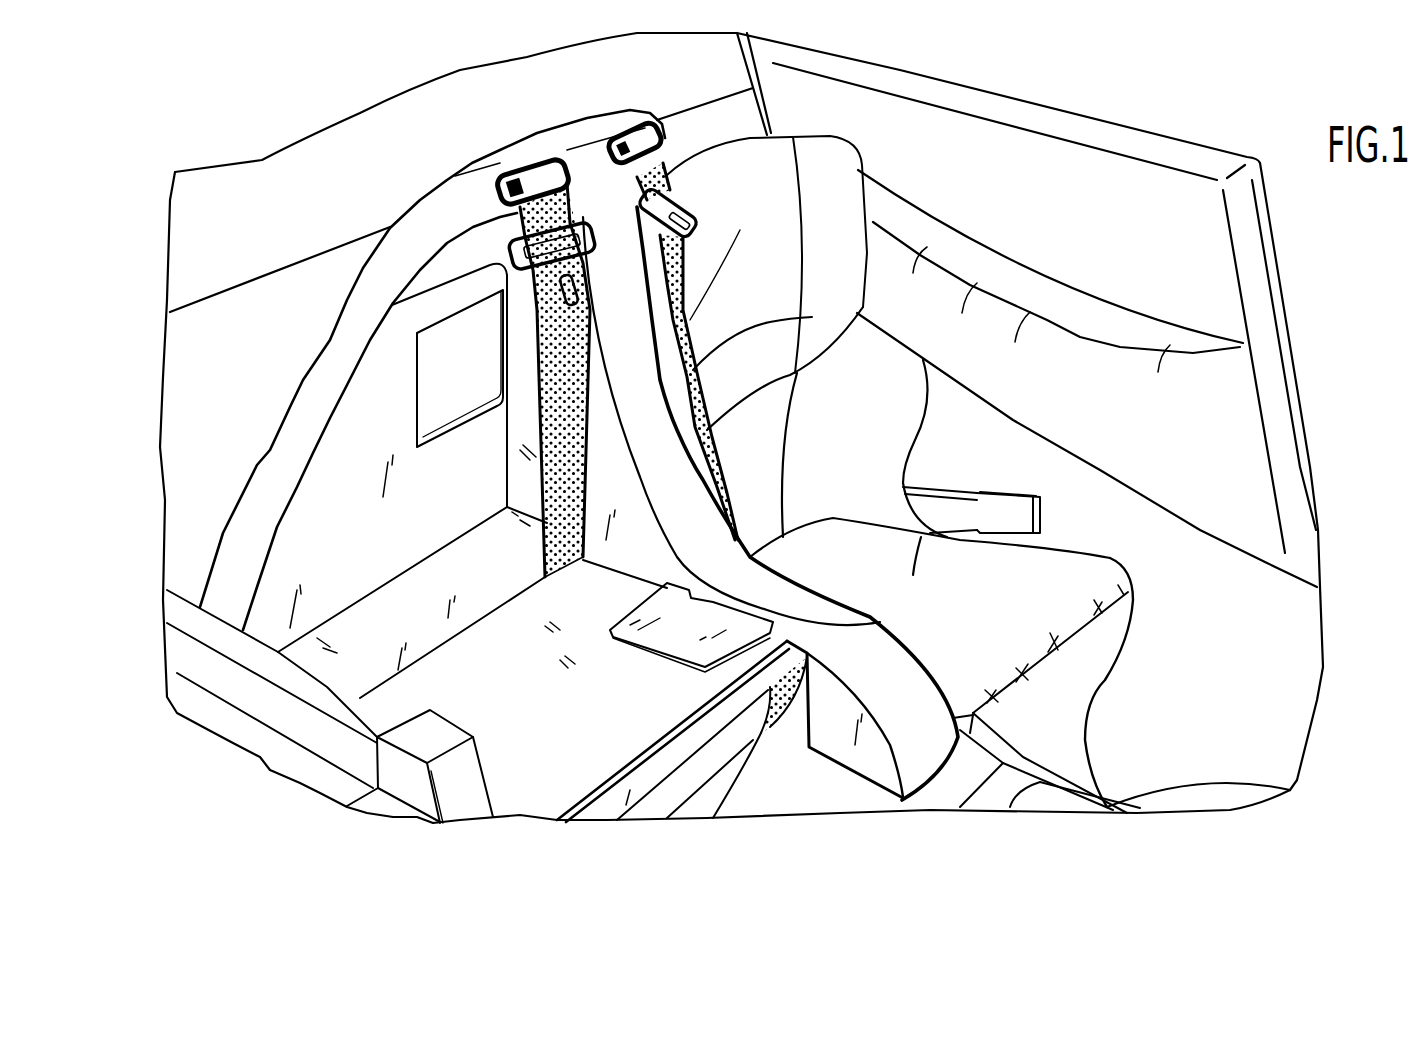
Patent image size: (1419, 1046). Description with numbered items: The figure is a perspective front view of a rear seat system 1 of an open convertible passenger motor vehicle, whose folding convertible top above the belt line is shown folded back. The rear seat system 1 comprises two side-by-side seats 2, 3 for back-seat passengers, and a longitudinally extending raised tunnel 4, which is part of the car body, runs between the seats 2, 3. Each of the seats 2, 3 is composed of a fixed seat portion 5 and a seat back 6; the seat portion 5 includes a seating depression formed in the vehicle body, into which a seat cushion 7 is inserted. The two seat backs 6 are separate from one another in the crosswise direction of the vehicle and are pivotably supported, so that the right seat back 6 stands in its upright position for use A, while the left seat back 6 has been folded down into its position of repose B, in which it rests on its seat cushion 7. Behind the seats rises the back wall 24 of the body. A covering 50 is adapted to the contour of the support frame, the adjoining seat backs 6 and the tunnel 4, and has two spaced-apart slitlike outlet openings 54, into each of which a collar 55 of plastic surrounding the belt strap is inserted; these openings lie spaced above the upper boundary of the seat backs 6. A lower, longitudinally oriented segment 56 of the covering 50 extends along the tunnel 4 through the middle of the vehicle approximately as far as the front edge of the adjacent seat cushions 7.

The rear seat system 1 is at (920, 827).
The seat 2 is at (558, 830).
The seat 3 is at (1066, 740).
The tunnel 4 is at (1007, 783).
The seat portion 5 is at (1055, 578).
The seat back 6 is at (790, 233).
The seat cushion 7 is at (1050, 630).
The back wall 24 is at (269, 361).
The covering 50 is at (496, 140).
The outlet opening 54 is at (627, 120).
The collar 55 is at (497, 180).
The lower segment of the covering 56 is at (863, 763).
The upright position for use A is at (732, 175).
The position of repose B is at (521, 658).